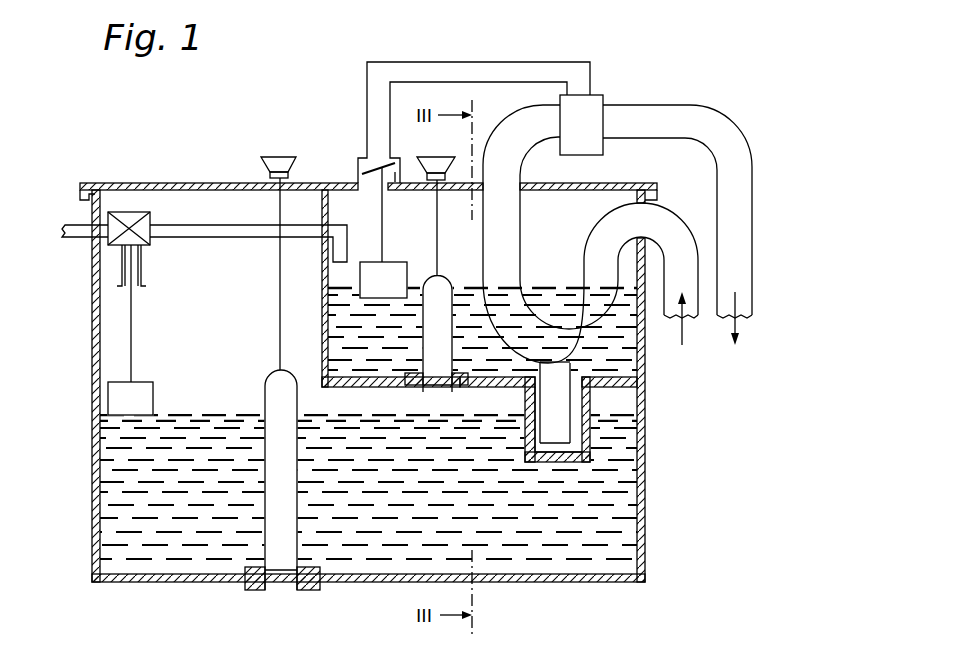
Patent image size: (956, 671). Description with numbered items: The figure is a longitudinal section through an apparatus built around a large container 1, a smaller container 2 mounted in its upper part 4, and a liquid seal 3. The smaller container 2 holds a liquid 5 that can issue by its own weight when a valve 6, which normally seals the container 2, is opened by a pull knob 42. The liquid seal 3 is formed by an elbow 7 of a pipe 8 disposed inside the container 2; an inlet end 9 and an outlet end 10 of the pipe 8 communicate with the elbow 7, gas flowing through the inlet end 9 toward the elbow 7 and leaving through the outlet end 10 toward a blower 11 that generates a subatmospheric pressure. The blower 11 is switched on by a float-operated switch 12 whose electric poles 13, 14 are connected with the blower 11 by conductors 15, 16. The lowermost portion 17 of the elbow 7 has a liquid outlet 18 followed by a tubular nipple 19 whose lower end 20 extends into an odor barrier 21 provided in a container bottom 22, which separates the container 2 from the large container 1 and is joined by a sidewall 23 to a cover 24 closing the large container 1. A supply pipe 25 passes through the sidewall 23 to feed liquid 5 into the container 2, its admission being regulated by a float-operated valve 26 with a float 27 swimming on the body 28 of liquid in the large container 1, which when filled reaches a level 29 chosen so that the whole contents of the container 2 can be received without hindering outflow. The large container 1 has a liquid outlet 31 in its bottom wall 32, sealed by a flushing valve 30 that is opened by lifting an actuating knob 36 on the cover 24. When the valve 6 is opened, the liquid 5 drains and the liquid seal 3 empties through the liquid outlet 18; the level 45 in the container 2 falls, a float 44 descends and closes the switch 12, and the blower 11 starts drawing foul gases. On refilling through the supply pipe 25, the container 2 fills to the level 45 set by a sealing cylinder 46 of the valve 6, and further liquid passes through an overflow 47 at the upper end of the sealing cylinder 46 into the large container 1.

The large container 1 is at (625, 540).
The container 2 is at (488, 378).
The liquid seal 3 is at (520, 340).
The upper part 4 is at (185, 198).
The liquid 5 is at (365, 372).
The valve 6 is at (425, 390).
The elbow 7 is at (608, 330).
The pipe 8 is at (632, 118).
The inlet end 9 is at (595, 250).
The outlet end 10 is at (508, 238).
The blower 11 is at (590, 110).
The float-operated switch 12 is at (372, 166).
The electric pole 13 is at (358, 172).
The electric pole 14 is at (395, 178).
The conductor 15 is at (460, 62).
The conductor 16 is at (490, 82).
The lowermost portion 17 is at (552, 362).
The liquid outlet 18 is at (585, 396).
The tubular nipple 19 is at (570, 456).
The lower end 20 is at (557, 450).
The odor barrier 21 is at (588, 442).
The container bottom 22 is at (620, 389).
The sidewall 23 is at (320, 322).
The cover 24 is at (130, 184).
The supply pipe 25 is at (270, 232).
The float-operated valve 26 is at (110, 222).
The float 27 is at (110, 402).
The body of liquid 28 is at (118, 495).
The level 29 is at (215, 412).
The flushing valve 30 is at (250, 585).
The liquid outlet 31 is at (283, 575).
The bottom wall 32 is at (360, 580).
The actuating knob 36 is at (270, 165).
The pull knob 42 is at (437, 165).
The float 44 is at (385, 270).
The level 45 is at (445, 285).
The sealing cylinder 46 is at (432, 345).
The overflow 47 is at (430, 290).